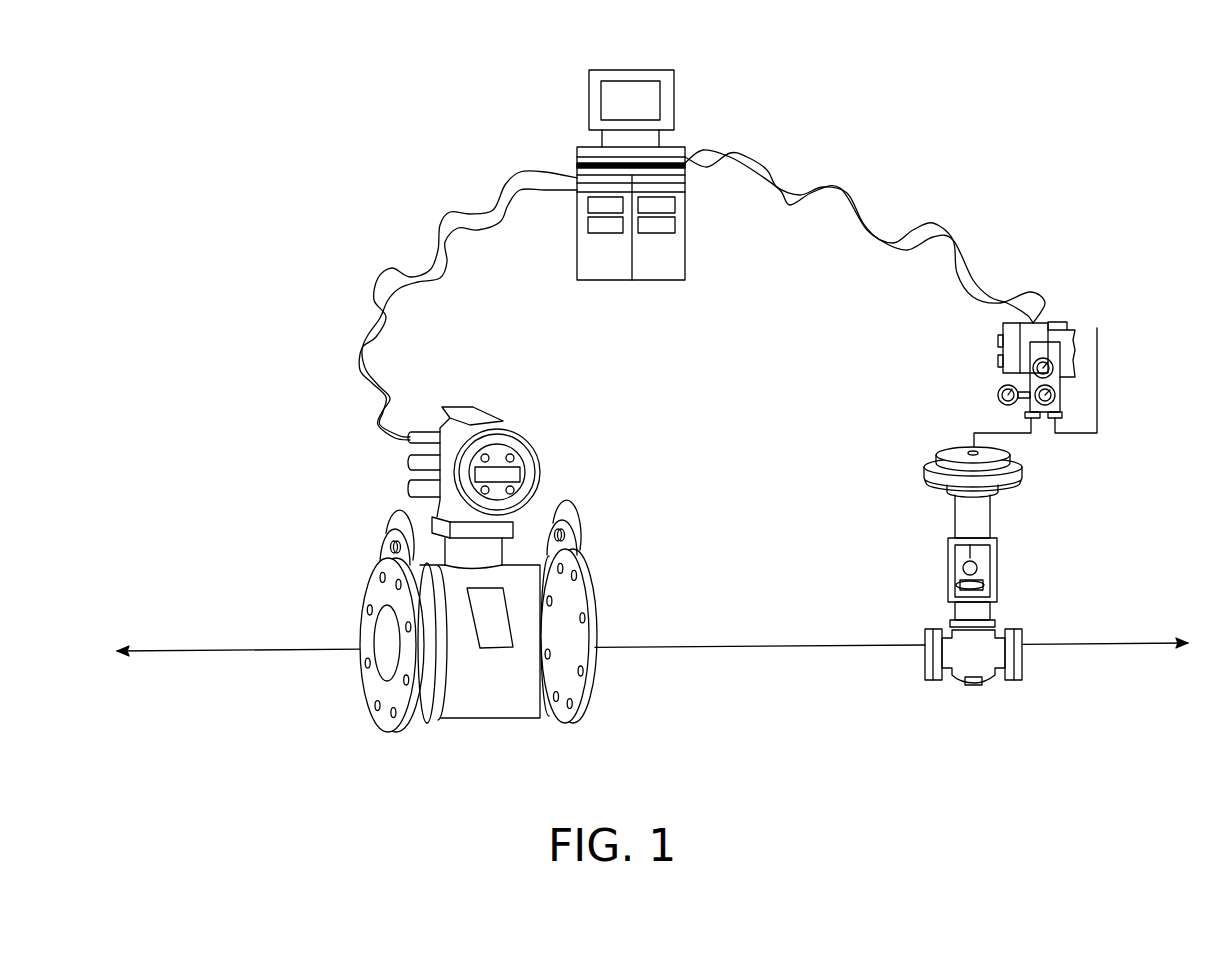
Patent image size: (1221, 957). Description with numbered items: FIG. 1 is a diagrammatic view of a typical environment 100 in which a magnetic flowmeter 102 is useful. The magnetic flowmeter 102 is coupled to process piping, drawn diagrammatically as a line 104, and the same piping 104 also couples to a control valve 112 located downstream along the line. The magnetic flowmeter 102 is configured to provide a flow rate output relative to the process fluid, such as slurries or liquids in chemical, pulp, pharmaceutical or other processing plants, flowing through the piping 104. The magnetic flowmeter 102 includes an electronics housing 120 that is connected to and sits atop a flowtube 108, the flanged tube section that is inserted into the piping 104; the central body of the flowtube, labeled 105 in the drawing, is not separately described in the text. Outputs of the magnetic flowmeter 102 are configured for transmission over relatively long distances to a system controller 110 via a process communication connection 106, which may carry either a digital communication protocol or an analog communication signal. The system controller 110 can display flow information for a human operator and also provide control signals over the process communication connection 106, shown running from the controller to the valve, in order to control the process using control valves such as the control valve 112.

The environment 100 is at (993, 147).
The magnetic flowmeter 102 is at (648, 498).
The process piping 104 is at (703, 647).
The flow meter body 105 is at (482, 700).
The process communication connection 106 is at (443, 212).
The flowtube 108 is at (363, 688).
The system controller 110 is at (674, 90).
The control valve 112 is at (992, 510).
The electronics housing 120 is at (513, 430).